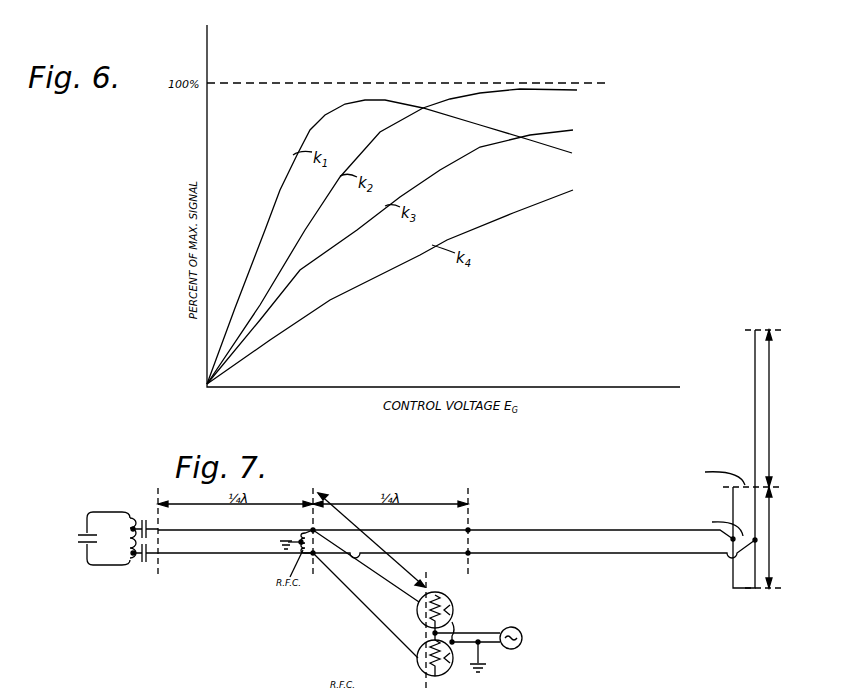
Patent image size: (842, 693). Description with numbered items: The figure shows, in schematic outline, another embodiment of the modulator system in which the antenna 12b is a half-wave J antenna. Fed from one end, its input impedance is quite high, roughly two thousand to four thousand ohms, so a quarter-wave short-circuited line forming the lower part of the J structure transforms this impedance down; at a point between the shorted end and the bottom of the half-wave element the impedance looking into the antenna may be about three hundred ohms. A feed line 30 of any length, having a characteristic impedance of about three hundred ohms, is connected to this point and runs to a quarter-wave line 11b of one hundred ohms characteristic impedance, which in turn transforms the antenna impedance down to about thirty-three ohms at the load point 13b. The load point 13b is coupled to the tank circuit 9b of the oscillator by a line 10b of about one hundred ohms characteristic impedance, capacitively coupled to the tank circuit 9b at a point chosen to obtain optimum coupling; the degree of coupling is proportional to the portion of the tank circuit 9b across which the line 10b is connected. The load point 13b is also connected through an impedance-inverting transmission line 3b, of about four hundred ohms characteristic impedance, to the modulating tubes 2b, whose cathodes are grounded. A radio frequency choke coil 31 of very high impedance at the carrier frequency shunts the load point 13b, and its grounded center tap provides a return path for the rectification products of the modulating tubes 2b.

The tank circuit 9b is at (94, 525).
The line 10b is at (240, 547).
The radio frequency choke coil 31 is at (295, 548).
The load point 13b is at (318, 540).
The quarter-wave line 11b is at (415, 558).
The transmission line 3b is at (368, 607).
The modulating tubes 2b is at (453, 606).
The transmission line (300 ohm) 30 is at (585, 546).
The antenna 12b is at (755, 418).